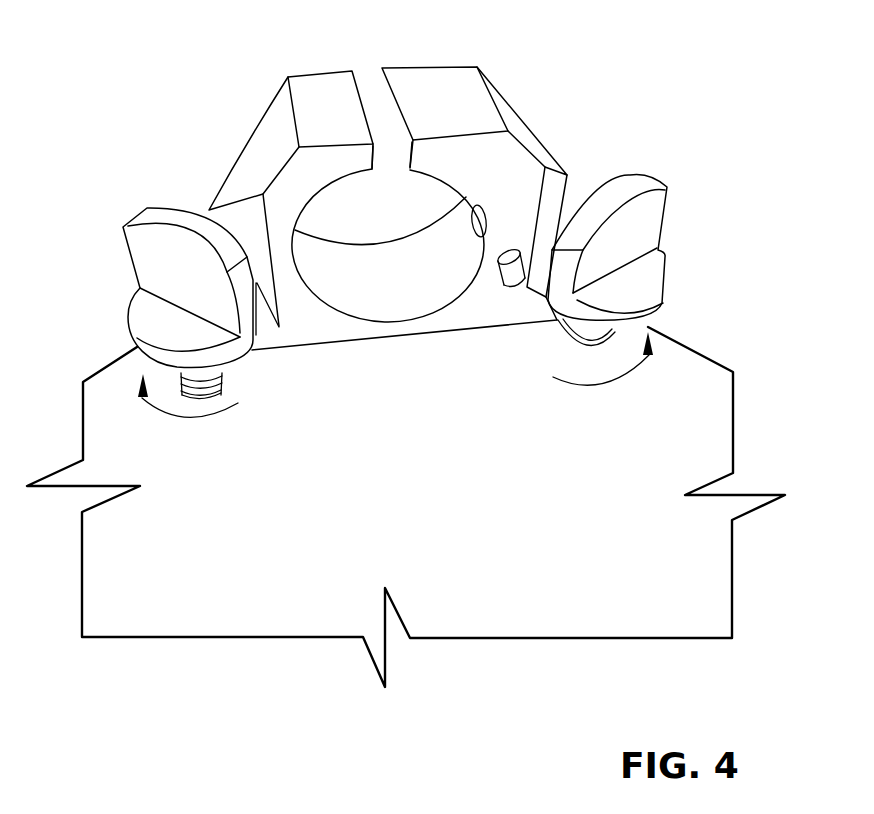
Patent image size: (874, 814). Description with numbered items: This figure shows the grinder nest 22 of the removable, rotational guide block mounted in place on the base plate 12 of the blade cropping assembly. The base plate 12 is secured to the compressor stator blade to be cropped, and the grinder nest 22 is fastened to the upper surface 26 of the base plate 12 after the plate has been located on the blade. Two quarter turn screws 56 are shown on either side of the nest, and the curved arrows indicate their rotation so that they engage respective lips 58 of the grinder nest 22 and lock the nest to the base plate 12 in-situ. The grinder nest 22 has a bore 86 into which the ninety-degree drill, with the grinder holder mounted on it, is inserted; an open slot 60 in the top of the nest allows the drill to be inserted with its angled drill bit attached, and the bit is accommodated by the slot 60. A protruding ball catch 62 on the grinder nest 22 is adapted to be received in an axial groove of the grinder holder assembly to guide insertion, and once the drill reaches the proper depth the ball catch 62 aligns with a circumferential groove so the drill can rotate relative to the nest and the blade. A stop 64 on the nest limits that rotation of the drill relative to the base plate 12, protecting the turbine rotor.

The base plate 12 is at (728, 338).
The grinder nest 22 is at (317, 110).
The upper surface 26 is at (620, 572).
The quarter turn screws 56 is at (160, 338).
The lips 58 is at (291, 330).
The open slot 60 is at (374, 115).
The ball catch 62 is at (480, 217).
The stop 64 is at (530, 291).
The bore 86 is at (377, 222).